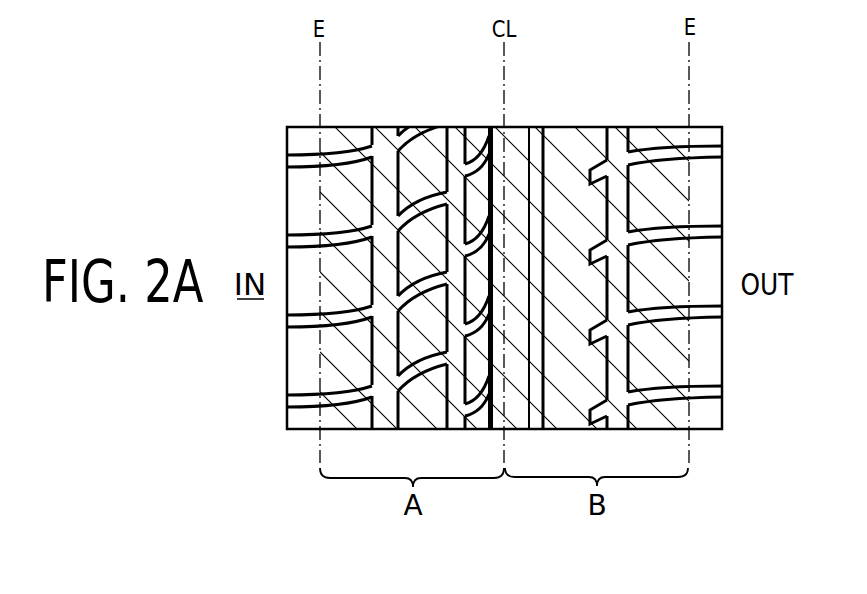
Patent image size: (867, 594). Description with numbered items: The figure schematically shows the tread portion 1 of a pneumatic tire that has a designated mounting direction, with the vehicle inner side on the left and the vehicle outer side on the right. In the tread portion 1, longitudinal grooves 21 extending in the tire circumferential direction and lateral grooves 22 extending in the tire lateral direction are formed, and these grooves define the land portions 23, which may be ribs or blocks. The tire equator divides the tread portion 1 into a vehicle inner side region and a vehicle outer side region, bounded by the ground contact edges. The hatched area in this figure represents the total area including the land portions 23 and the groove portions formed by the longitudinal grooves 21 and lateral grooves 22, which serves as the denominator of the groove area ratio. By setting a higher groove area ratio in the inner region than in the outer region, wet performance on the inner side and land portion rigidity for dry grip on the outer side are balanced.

The tread portion 1 is at (722, 93).
The longitudinal grooves 21 is at (382, 127).
The lateral grooves 22 is at (347, 410).
The land portions 23 is at (343, 128).